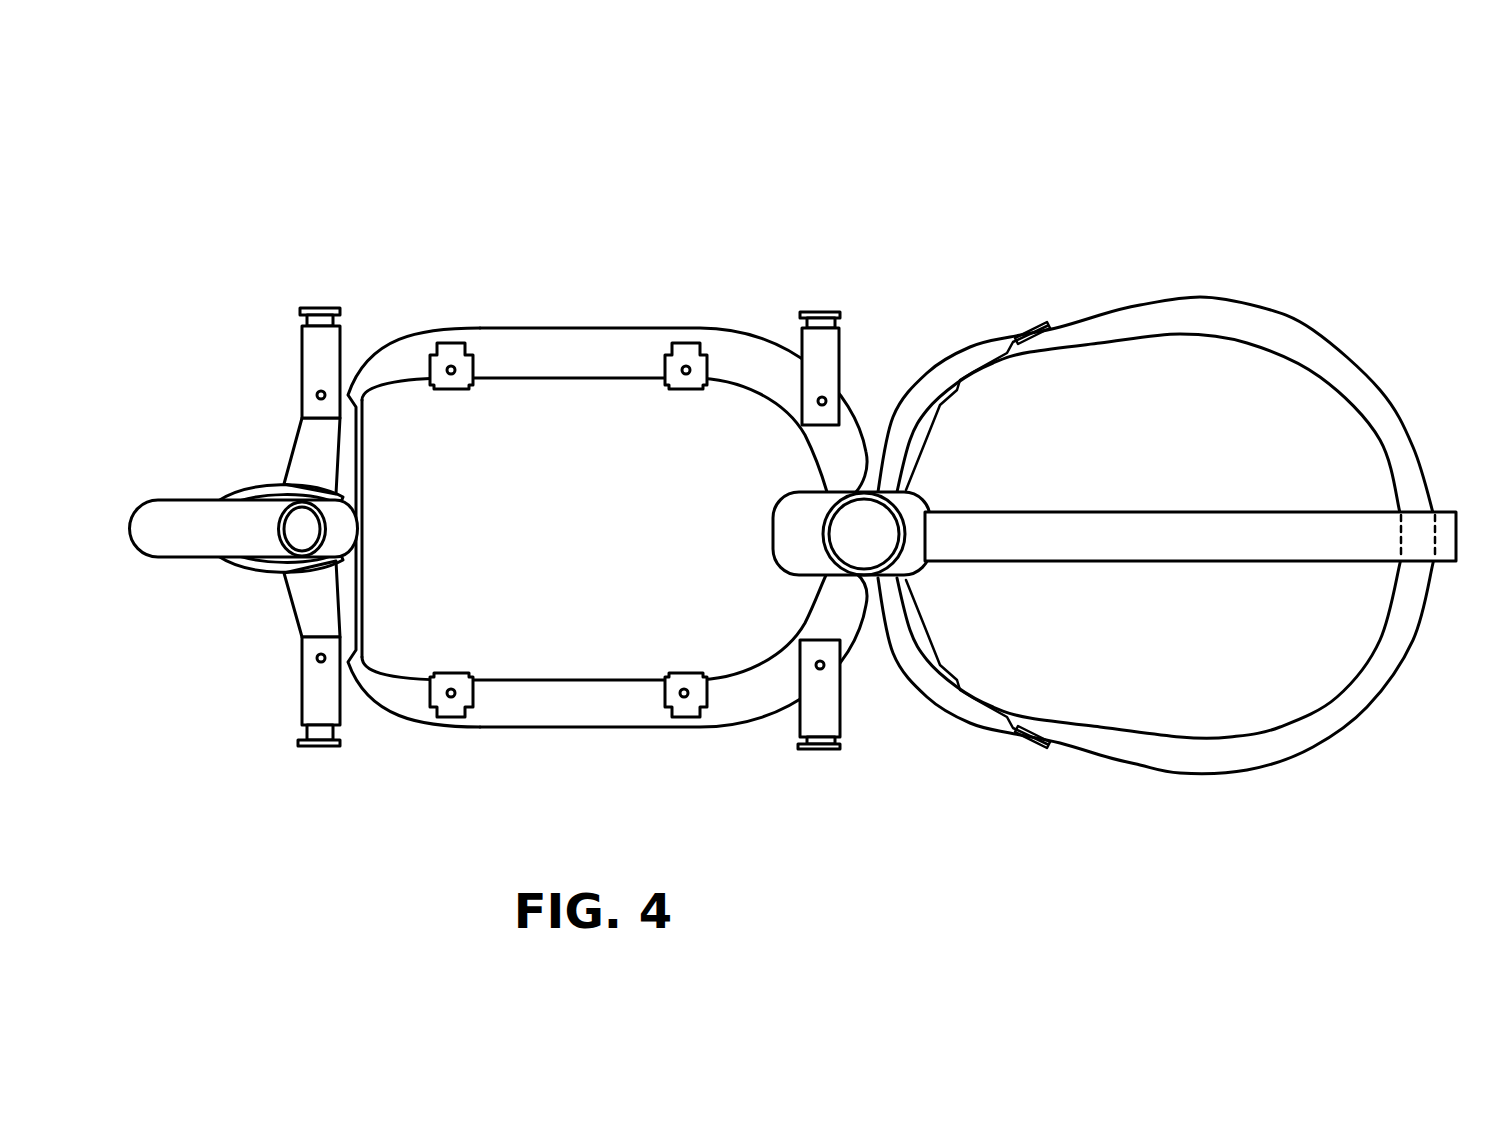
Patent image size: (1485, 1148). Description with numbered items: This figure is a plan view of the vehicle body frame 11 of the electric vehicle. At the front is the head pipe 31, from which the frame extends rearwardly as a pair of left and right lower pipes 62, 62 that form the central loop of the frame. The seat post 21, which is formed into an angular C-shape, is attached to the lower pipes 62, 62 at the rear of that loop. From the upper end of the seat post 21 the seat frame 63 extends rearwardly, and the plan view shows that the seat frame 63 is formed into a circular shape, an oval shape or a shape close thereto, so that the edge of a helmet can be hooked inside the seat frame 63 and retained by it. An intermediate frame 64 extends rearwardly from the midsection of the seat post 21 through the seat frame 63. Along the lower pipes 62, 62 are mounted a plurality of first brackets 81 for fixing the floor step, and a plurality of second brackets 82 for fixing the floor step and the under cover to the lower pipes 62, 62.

The vehicle body frame 11 is at (278, 199).
The seat post 21 is at (797, 535).
The head pipe 31 is at (182, 500).
The lower pipes 62 is at (575, 326).
The seat frame 63 is at (1157, 298).
The intermediate frame 64 is at (1155, 563).
The first brackets 81 is at (455, 391).
The second brackets 82 is at (300, 368).